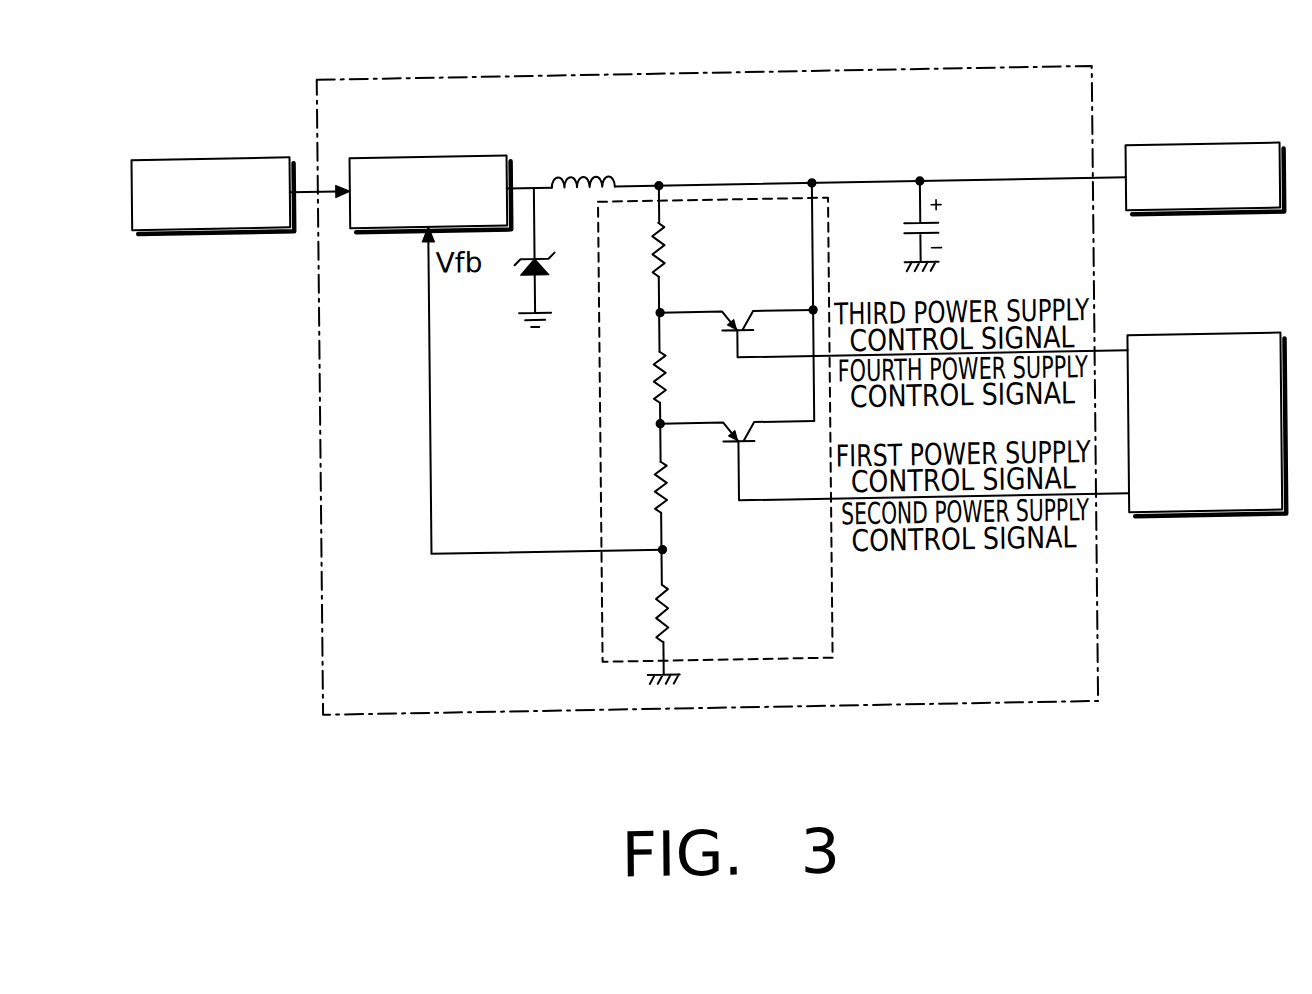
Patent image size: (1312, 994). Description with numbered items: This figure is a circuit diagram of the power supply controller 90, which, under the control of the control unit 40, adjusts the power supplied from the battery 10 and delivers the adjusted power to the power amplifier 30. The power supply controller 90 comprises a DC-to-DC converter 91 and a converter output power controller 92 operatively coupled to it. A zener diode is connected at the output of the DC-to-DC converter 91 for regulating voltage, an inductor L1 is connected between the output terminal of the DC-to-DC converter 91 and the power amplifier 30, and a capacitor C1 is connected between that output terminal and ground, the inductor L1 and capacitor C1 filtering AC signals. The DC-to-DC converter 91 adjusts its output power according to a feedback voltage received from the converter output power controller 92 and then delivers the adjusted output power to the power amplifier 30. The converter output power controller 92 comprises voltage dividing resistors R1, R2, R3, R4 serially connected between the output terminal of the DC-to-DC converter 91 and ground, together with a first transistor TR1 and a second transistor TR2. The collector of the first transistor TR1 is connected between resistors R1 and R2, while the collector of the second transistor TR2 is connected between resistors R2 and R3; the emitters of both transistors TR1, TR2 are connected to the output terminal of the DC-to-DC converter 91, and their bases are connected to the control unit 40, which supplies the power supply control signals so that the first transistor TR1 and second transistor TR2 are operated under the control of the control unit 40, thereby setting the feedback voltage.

The battery 10 is at (211, 151).
The power amplifier 30 is at (1203, 154).
The control unit 40 is at (1204, 344).
The power supply controller 90 is at (783, 71).
The DC-to-DC converter 91 is at (430, 150).
The converter output power controller 92 is at (831, 627).
The inductor L1 is at (582, 165).
The capacitor C1 is at (945, 225).
The voltage dividing resistor R1 is at (681, 249).
The voltage dividing resistor R2 is at (682, 377).
The voltage dividing resistor R3 is at (684, 487).
The voltage dividing resistor R4 is at (642, 614).
The first NPN transistor TR1 is at (894, 313).
The second NPN transistor TR2 is at (894, 440).